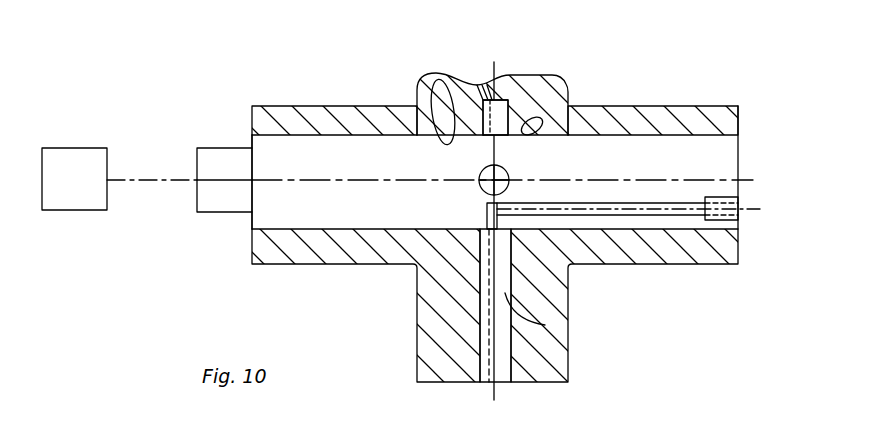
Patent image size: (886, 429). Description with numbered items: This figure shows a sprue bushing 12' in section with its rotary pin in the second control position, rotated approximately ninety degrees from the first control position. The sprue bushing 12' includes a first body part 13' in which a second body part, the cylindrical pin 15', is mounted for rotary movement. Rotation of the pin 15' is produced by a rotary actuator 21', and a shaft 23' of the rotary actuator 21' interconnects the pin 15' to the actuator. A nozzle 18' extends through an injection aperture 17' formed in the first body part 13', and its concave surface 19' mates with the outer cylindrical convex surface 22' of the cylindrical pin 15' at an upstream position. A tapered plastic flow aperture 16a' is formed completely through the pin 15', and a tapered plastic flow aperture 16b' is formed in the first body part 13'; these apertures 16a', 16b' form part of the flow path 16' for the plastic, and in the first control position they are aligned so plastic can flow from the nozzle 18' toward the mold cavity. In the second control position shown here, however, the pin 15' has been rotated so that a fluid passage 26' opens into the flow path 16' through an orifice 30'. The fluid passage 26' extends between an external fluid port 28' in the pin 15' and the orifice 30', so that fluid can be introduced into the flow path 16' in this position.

The sprue bushing 12' is at (492, 216).
The first body part 13' is at (334, 92).
The cylindrical pin 15' is at (216, 139).
The flow path 16' is at (422, 305).
The tapered plastic flow aperture 16a' is at (453, 172).
The tapered plastic flow aperture 16b' is at (574, 315).
The injection aperture 17' is at (526, 94).
The nozzle 18' is at (408, 85).
The concave surface 19' is at (464, 79).
The rotary actuator 21' is at (74, 207).
The outer cylindrical convex surface 22' is at (536, 142).
The shaft 23' is at (220, 207).
The fluid passage 26' is at (628, 184).
The external fluid port 28' is at (741, 180).
The orifice 30' is at (450, 215).